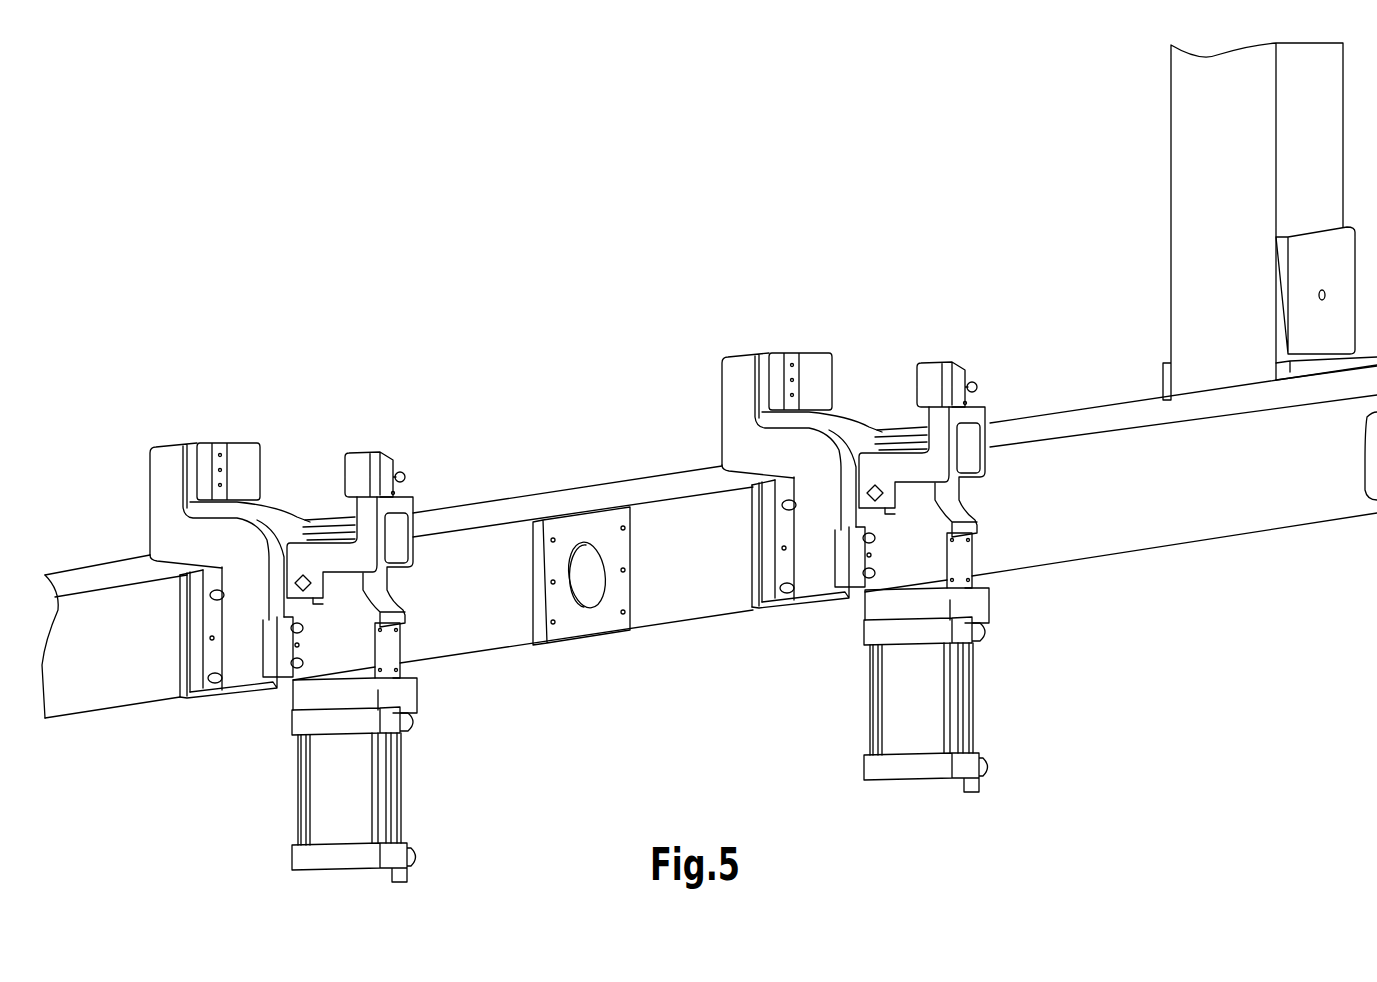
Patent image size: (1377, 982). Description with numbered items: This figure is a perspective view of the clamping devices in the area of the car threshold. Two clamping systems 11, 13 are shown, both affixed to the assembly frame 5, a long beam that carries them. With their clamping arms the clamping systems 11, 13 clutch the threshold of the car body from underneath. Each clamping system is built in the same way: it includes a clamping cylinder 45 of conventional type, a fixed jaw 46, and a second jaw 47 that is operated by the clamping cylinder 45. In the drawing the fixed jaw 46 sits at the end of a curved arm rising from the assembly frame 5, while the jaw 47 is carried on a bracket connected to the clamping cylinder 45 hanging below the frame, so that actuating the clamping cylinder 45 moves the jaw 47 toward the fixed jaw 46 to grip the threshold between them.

The assembly frame 5 is at (497, 512).
The clamping system 11 is at (227, 740).
The clamping system 13 is at (818, 635).
The clamping cylinder 45 is at (364, 798).
The fixed jaw 46 is at (237, 455).
The jaw 47 is at (358, 460).